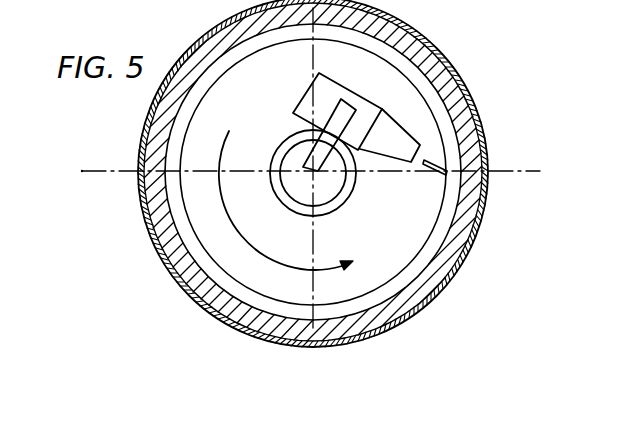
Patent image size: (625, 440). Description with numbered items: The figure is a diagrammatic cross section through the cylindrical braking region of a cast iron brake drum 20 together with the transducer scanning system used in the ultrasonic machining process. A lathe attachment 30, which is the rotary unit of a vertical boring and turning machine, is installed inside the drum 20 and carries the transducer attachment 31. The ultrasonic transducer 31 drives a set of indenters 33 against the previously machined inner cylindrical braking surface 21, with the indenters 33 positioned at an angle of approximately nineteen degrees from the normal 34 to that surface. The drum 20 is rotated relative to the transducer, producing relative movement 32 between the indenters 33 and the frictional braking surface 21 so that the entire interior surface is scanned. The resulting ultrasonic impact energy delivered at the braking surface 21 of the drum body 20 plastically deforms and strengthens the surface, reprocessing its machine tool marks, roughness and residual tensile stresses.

The drum 20 is at (421, 311).
The braking surface 21 is at (433, 237).
The lathe attachment 30 is at (348, 193).
The transducer attachment 31 is at (330, 83).
The relative movement 32 is at (230, 218).
The set of indenters 33 is at (440, 165).
The normal 34 is at (115, 170).